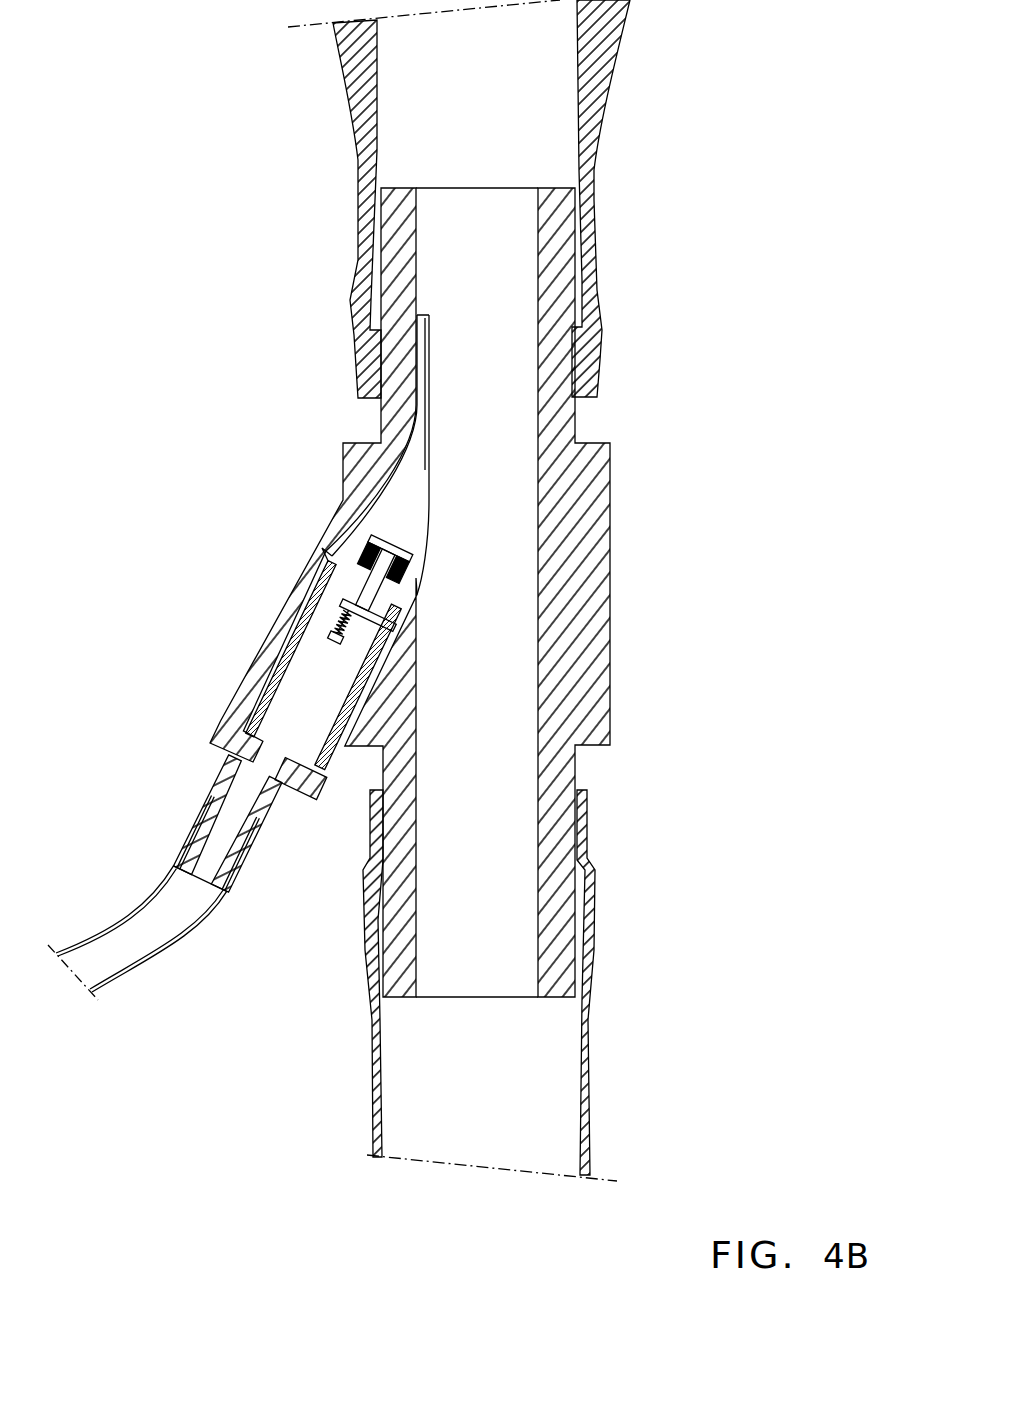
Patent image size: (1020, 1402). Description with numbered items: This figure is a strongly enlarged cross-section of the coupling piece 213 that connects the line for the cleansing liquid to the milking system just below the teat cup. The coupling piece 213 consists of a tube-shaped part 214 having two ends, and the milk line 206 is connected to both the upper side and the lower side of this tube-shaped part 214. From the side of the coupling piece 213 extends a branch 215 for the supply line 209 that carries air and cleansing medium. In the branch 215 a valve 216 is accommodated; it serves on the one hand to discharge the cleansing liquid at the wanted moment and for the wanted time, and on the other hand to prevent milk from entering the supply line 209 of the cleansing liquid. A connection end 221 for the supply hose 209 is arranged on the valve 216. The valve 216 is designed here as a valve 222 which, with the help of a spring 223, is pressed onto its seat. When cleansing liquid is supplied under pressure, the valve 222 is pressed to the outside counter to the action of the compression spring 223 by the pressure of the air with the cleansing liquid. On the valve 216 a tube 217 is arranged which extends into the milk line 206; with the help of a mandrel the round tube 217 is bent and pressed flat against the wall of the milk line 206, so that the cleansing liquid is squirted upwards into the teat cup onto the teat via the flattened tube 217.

The milk line 206 is at (585, 993).
The supply line 209 is at (145, 940).
The coupling piece 213 is at (668, 455).
The tube-shaped part 214 is at (560, 353).
The branch 215 is at (237, 702).
The valve 216 is at (408, 522).
The tube 217 is at (408, 366).
The connection end 221 is at (237, 783).
The valve 222 is at (372, 548).
The spring 223 is at (335, 625).